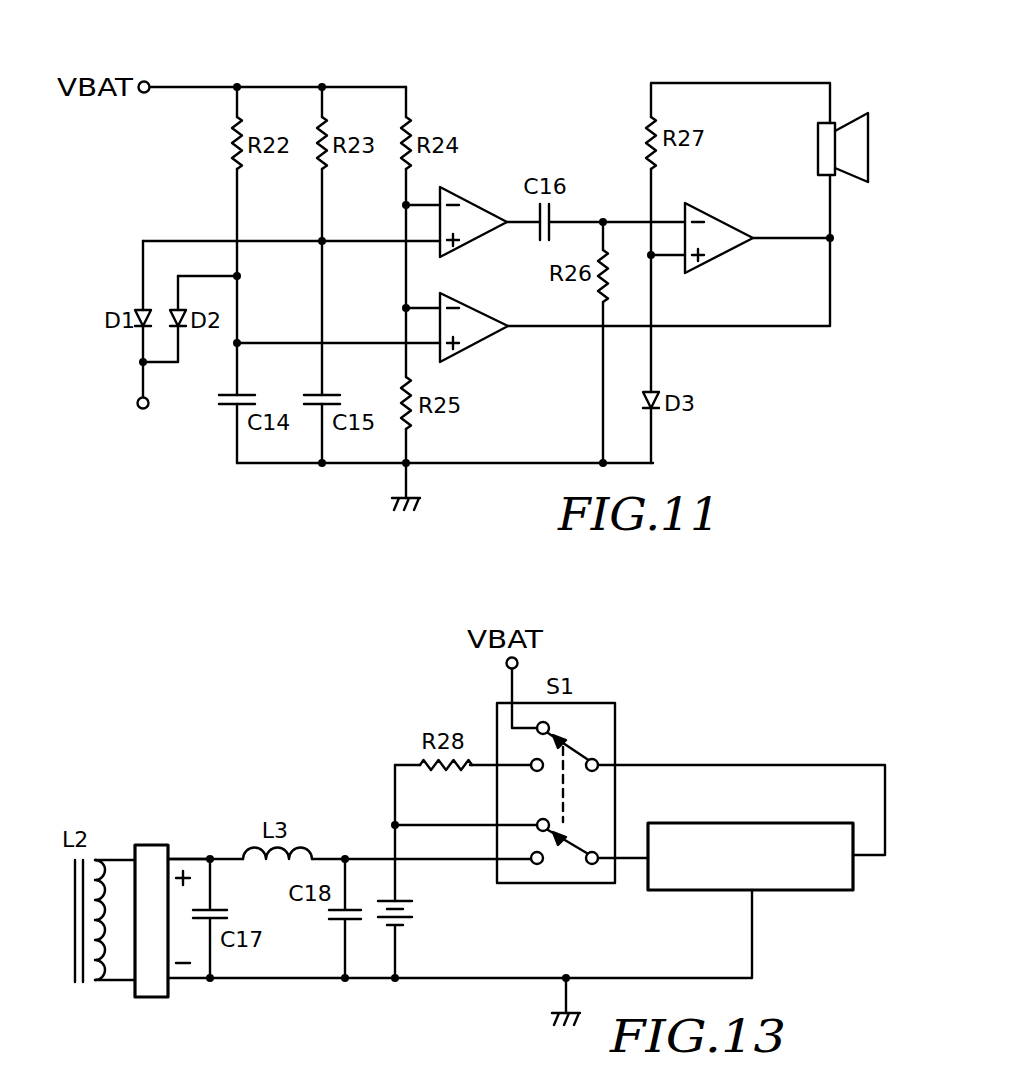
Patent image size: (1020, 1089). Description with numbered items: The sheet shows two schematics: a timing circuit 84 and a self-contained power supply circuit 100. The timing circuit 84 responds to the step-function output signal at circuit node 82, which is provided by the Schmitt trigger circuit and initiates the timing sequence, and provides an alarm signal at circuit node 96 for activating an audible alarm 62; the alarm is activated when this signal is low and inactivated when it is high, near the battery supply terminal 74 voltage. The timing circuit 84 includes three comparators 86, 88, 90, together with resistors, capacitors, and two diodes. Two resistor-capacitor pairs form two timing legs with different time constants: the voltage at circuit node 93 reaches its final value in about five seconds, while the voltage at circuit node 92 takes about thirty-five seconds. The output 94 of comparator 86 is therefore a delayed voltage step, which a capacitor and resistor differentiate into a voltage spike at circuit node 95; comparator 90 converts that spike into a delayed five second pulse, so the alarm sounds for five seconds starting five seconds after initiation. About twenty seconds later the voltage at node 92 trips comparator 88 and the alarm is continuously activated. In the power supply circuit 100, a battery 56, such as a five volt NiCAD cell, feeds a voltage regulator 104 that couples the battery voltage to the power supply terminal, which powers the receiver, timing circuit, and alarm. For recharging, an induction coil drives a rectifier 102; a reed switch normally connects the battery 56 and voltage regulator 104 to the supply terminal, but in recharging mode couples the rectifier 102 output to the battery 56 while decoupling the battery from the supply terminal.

In FIG. 11, the battery voltage terminal 74 is at (150, 86).
In FIG. 11, the timing circuit 84 is at (136, 200).
In FIG. 11, the circuit node 92 is at (233, 275).
In FIG. 11, the circuit node 93 is at (318, 240).
In FIG. 11, the comparator 86 is at (478, 208).
In FIG. 11, the output of comparator 86 94 is at (519, 226).
In FIG. 11, the circuit node 95 is at (603, 219).
In FIG. 11, the circuit node 96 is at (826, 235).
In FIG. 11, the audible alarm 62 is at (867, 184).
In FIG. 11, the comparator 90 is at (742, 251).
In FIG. 11, the comparator 88 is at (490, 338).
In FIG. 11, the circuit node 82 is at (150, 406).
In FIG. 13, the power supply circuit 100 is at (267, 788).
In FIG. 13, the battery 56 is at (418, 908).
In FIG. 13, the rectifier 102 is at (152, 998).
In FIG. 13, the voltage regulator 104 is at (800, 892).